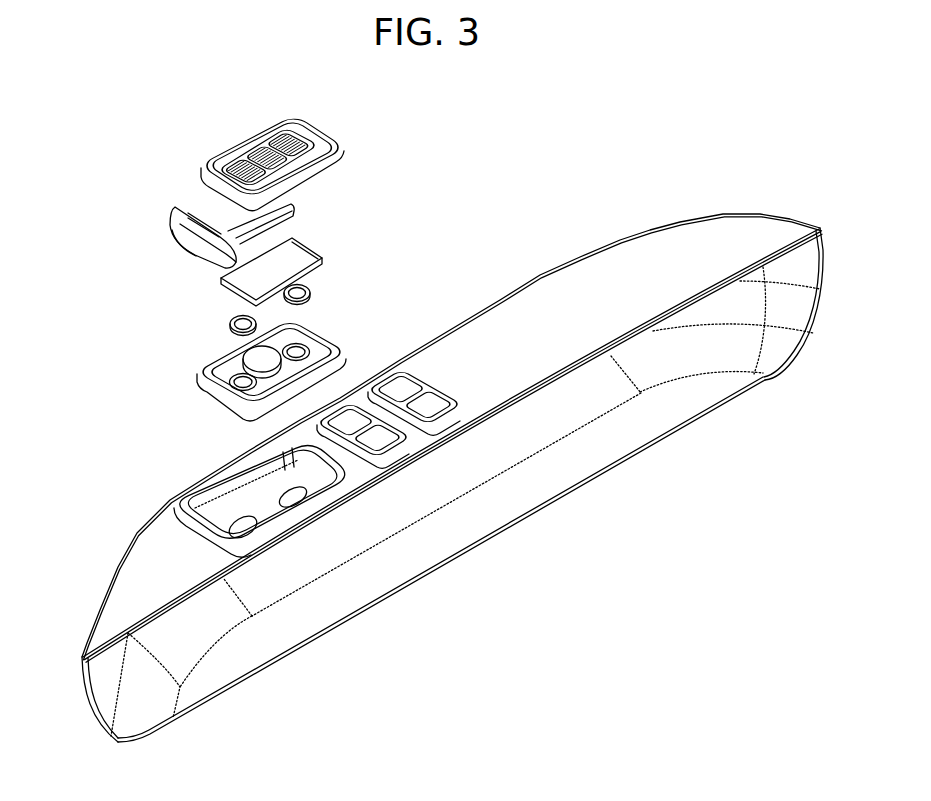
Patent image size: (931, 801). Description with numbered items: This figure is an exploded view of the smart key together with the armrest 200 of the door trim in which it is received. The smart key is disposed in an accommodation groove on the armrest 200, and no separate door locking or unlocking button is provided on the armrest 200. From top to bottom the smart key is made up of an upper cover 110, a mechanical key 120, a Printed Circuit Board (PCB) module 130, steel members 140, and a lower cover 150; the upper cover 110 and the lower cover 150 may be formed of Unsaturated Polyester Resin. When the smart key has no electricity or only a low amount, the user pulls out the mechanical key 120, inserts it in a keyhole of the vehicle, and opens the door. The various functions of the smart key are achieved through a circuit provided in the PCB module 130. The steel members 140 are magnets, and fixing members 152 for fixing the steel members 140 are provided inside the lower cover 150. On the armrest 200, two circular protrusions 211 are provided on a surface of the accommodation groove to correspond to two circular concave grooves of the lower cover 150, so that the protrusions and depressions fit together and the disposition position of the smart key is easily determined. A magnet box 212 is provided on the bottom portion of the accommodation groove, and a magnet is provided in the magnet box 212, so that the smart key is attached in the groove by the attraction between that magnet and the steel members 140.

The upper cover 110 is at (201, 167).
The mechanical key 120 is at (172, 216).
The Printed Circuit Board (PCB) module 130 is at (222, 279).
The steel members 140 is at (284, 296).
The lower cover 150 is at (200, 385).
The fixing members 152 is at (283, 352).
The armrest 200 is at (435, 478).
The circular protrusions 211 is at (285, 492).
The magnet box 212 is at (213, 574).